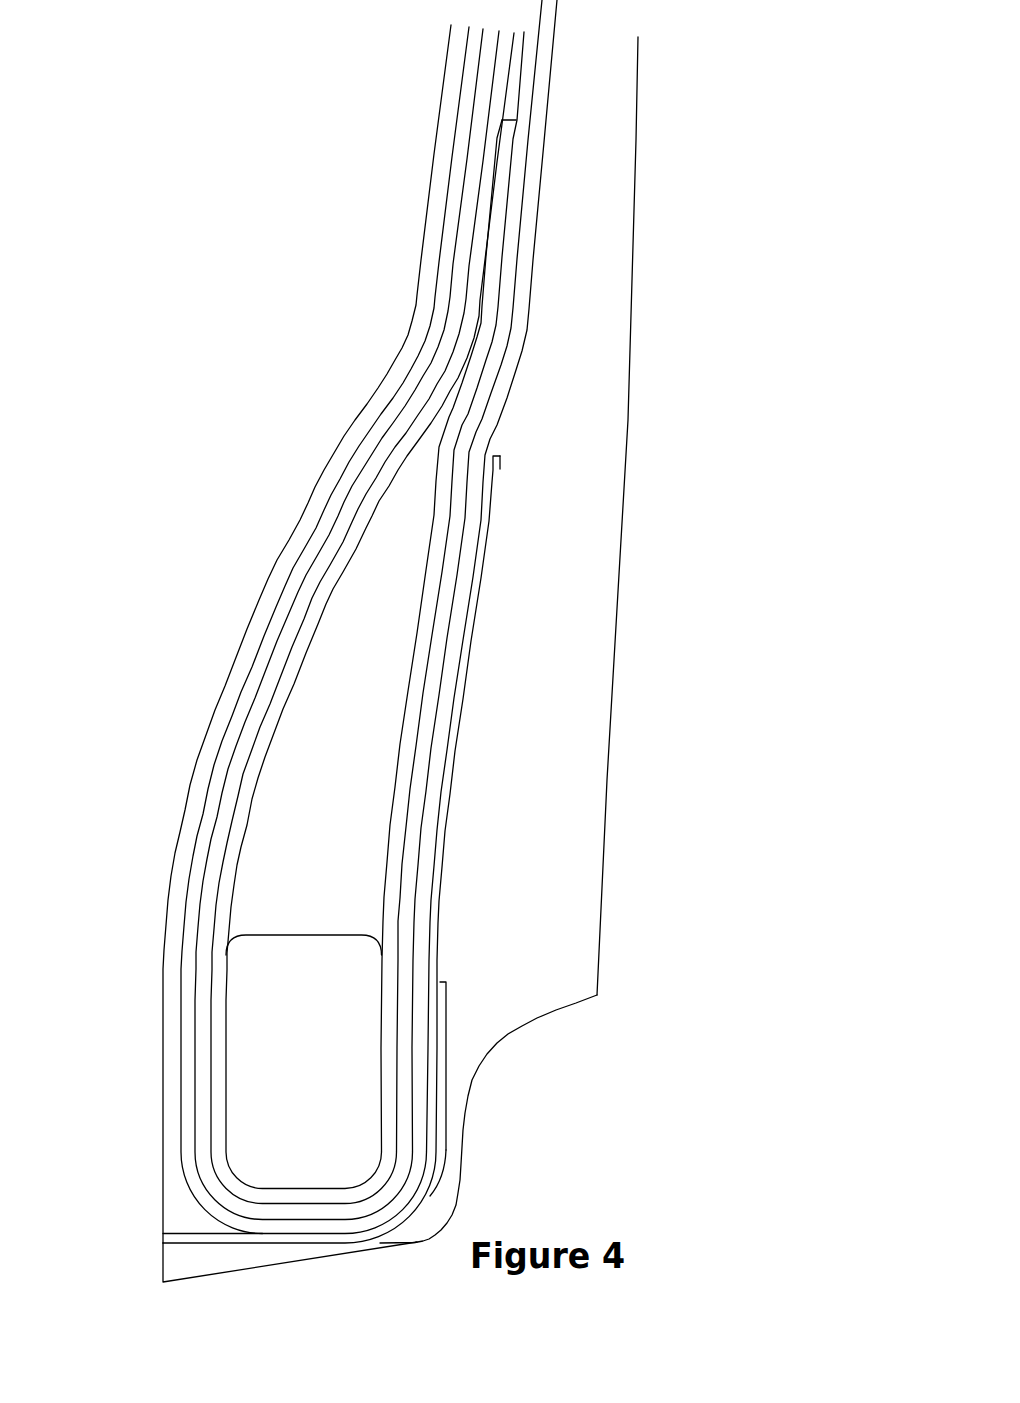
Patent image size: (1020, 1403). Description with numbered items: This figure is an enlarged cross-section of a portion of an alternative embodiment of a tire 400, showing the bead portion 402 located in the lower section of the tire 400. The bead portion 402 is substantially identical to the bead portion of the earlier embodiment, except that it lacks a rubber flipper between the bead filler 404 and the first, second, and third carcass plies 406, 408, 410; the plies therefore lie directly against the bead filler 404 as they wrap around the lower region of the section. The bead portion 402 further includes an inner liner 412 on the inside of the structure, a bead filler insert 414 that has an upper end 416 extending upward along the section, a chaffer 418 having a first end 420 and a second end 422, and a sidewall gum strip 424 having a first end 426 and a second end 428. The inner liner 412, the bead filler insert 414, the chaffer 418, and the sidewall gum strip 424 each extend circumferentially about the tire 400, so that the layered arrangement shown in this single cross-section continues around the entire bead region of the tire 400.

The tire 400 is at (136, 381).
The bead portion 402 is at (165, 695).
The bead filler 404 is at (270, 1106).
The first carcass ply 406 is at (188, 1003).
The second carcass ply 408 is at (208, 975).
The third carcass ply 410 is at (220, 960).
The inner liner 412 is at (178, 1203).
The bead filler insert 414 is at (290, 875).
The upper end 416 is at (464, 370).
The chaffer 418 is at (440, 1006).
The first end 420 is at (165, 1241).
The second end 422 is at (440, 982).
The sidewall gum strip 424 is at (433, 947).
The first end 426 is at (432, 1150).
The second end 428 is at (496, 469).